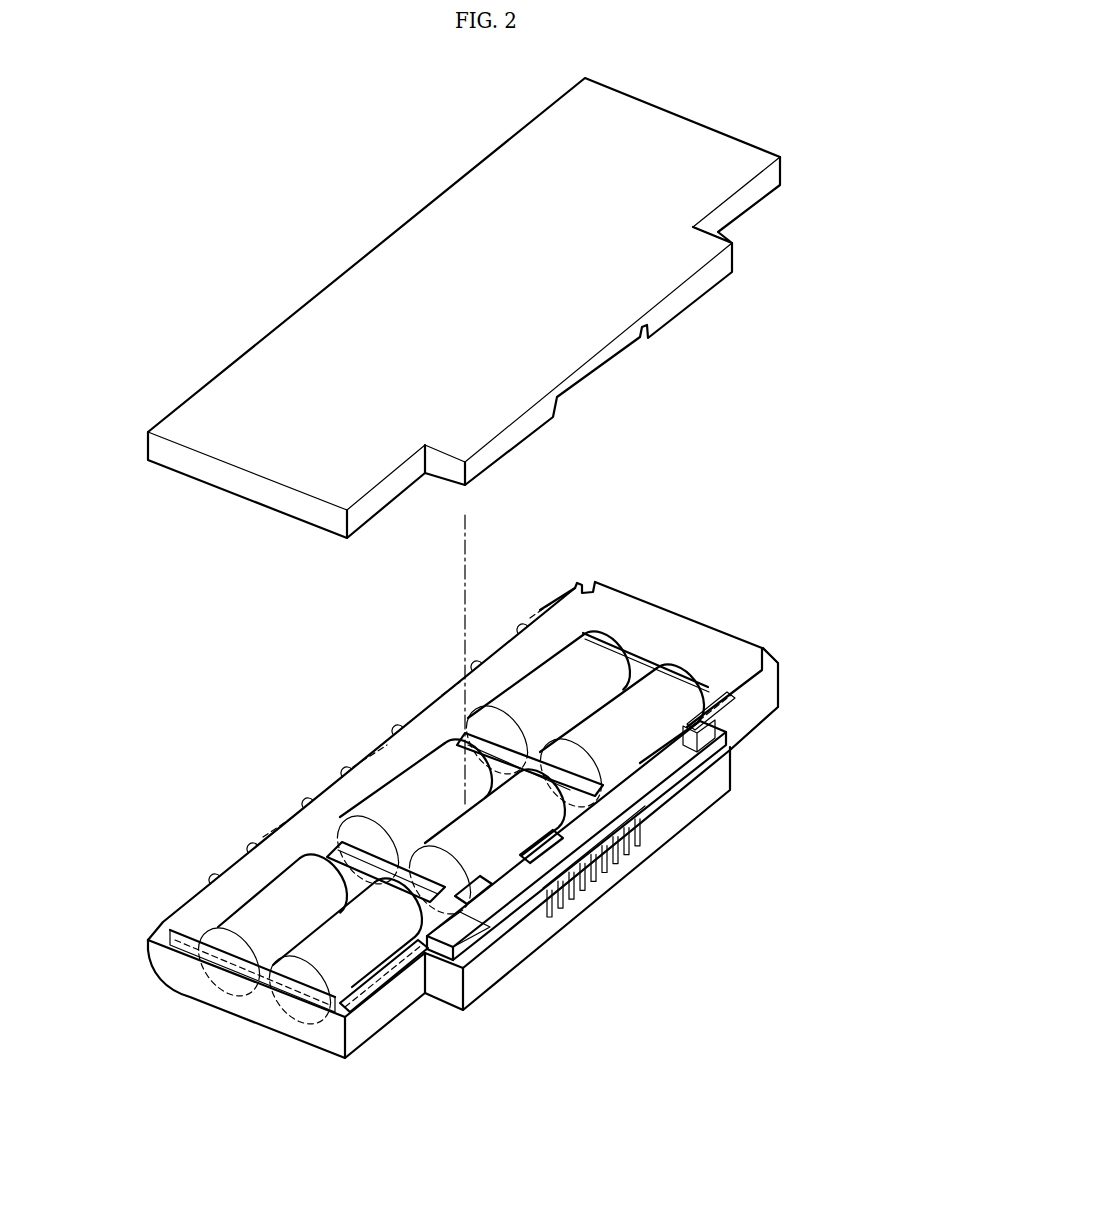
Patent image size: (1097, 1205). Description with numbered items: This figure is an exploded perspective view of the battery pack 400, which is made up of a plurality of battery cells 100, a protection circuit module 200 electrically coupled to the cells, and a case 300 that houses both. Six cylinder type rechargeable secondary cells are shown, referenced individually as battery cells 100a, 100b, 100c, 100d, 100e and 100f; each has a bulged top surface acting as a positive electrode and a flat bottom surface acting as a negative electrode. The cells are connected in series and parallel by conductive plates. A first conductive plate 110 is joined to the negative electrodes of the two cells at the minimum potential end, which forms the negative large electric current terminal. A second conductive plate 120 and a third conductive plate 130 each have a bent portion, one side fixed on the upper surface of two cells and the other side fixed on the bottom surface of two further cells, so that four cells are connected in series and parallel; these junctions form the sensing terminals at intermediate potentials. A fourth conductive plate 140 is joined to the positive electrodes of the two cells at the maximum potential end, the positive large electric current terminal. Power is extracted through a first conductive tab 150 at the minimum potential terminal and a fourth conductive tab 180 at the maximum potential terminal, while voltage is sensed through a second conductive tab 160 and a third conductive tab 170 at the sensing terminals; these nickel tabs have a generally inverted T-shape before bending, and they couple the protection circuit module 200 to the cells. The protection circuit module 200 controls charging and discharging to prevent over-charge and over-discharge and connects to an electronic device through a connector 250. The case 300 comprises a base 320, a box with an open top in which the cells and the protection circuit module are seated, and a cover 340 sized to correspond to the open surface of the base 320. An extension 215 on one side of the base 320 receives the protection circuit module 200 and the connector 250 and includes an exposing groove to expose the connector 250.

The battery cells 100 is at (222, 926).
The battery cell 100a is at (272, 925).
The battery cell 100b is at (345, 951).
The battery cell 100c is at (414, 811).
The battery cell 100d is at (487, 841).
The battery cell 100e is at (548, 702).
The battery cell 100f is at (622, 735).
The first conductive plate 110 is at (210, 968).
The second conductive plate 120 is at (327, 853).
The third conductive plate 130 is at (530, 853).
The fourth conductive plate 140 is at (602, 644).
The first conductive tab 150 is at (397, 988).
The second conductive tab 160 is at (430, 900).
The third conductive tab 170 is at (603, 788).
The fourth conductive tab 180 is at (717, 688).
The protection circuit module 200 is at (650, 780).
The extension 215 is at (517, 940).
The connector 250 is at (627, 853).
The case 300 is at (880, 315).
The base 320 is at (697, 608).
The cover 340 is at (670, 253).
The battery pack 400 is at (232, 272).